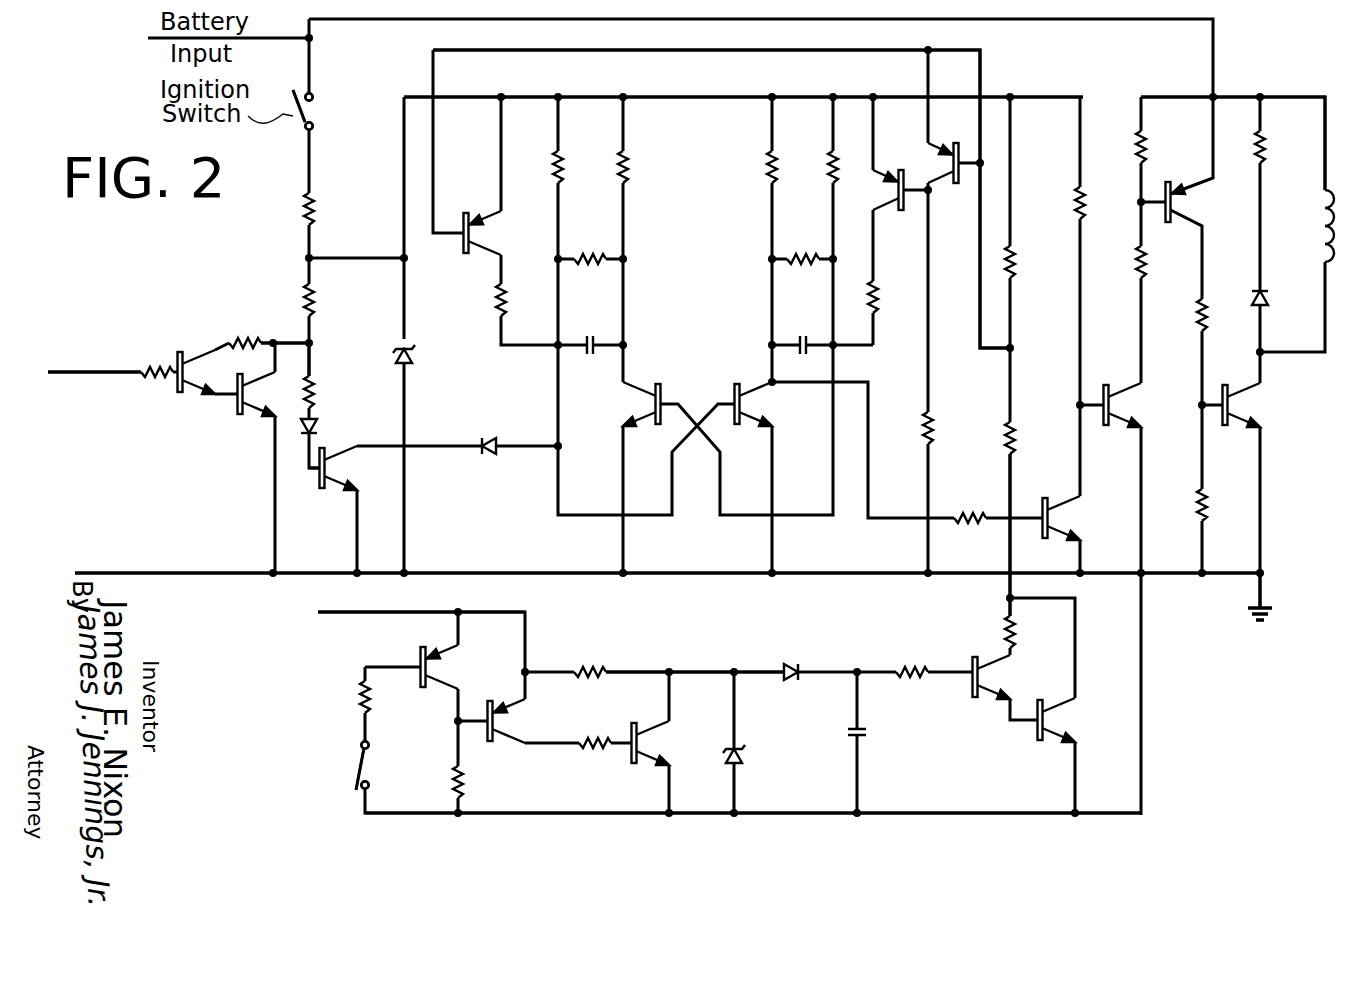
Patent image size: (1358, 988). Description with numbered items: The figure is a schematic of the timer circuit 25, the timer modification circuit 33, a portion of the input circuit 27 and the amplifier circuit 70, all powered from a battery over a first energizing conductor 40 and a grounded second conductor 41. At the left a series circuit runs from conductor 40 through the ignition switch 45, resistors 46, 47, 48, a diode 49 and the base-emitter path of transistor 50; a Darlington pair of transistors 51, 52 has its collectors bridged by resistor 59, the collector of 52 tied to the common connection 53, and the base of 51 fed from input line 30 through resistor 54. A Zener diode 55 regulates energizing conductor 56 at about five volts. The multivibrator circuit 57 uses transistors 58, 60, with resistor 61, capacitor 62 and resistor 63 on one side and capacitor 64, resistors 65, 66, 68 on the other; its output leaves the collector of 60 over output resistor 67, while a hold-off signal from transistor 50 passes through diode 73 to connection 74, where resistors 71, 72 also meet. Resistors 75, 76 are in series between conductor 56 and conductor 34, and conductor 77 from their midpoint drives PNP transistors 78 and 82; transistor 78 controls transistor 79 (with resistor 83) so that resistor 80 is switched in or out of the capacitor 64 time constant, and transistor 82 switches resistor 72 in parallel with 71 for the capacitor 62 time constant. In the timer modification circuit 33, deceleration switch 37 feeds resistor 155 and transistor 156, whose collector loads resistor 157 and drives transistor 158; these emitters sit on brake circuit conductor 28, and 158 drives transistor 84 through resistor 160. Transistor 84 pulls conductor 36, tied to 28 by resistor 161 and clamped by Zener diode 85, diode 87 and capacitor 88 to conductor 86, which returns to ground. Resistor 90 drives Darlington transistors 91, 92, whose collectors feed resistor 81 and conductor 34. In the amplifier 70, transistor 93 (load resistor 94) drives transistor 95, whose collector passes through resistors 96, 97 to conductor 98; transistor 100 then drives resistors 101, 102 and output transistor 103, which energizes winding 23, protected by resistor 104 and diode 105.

The winding 23 is at (1311, 226).
The timer circuit 25 is at (698, 72).
The input circuit 27 is at (222, 414).
The brake circuit conductor 28 is at (273, 652).
The input line 30 is at (90, 372).
The timer modification circuit 33 is at (917, 840).
The conductor 34 is at (1008, 552).
The conductor 36 is at (741, 672).
The vehicle deceleration switch 37 is at (379, 766).
The first energizing conductor 40 is at (427, 20).
The second energizing input conductor 41 is at (118, 573).
The ignition switch 45 is at (320, 110).
The resistor 46 is at (326, 209).
The resistor 47 is at (325, 300).
The resistor 48 is at (325, 392).
The diode 49 is at (323, 428).
The NPN type transistor 50 is at (343, 468).
The NPN type transistor 51 is at (202, 372).
The NPN type transistor 52 is at (261, 394).
The common connection 53 is at (311, 343).
The resistor 54 is at (156, 359).
The Zener diode 55 is at (410, 351).
The energizing conductor 56 is at (532, 96).
The multivibrator circuit 57 is at (712, 372).
The NPN type transistor 58 is at (634, 404).
The resistor 59 is at (244, 330).
The NPN type transistor 60 is at (764, 404).
The resistor 61 is at (639, 167).
The capacitor 62 is at (592, 334).
The resistor 63 is at (590, 247).
The capacitor 64 is at (807, 334).
The resistor 65 is at (803, 247).
The resistor 66 is at (820, 167).
The output resistor 67 is at (970, 505).
The resistor 68 is at (759, 167).
The amplifier circuit 70 is at (1130, 79).
The resistor 71 is at (575, 167).
The resistor 72 is at (517, 300).
The diode 73 is at (496, 435).
The connection 74 is at (575, 446).
The resistor 75 is at (1026, 262).
The resistor 76 is at (996, 438).
The conductor 77 is at (995, 50).
The PNP type transistor 78 is at (940, 163).
The PNP type transistor 79 is at (885, 190).
The resistor 80 is at (889, 297).
The resistor 81 is at (1025, 632).
The PNP type transistor 82 is at (490, 233).
The resistor 83 is at (914, 428).
The NPN type transistor 84 is at (659, 743).
The Zener diode 85 is at (754, 749).
The conductor 86 is at (985, 813).
The diode 87 is at (792, 656).
The capacitor 88 is at (876, 733).
The resistor 90 is at (912, 656).
The NPN type transistor 91 is at (998, 677).
The NPN transistor 92 is at (1066, 720).
The NPN type transistor 93 is at (1070, 518).
The resistor 94 is at (1066, 203).
The NPN type transistor 95 is at (1129, 405).
The resistor 96 is at (1126, 262).
The resistor 97 is at (1126, 147).
The conductor 98 is at (1300, 96).
The PNP type transistor 100 is at (1201, 202).
The resistor 101 is at (1186, 315).
The resistor 102 is at (1224, 505).
The NPN type transistor 103 is at (1254, 405).
The resistor 104 is at (1284, 147).
The diode 105 is at (1283, 295).
The input resistor 155 is at (345, 697).
The PNP type transistor 156 is at (454, 667).
The resistor 157 is at (480, 779).
The PNP type transistor 158 is at (519, 721).
The resistor 160 is at (596, 728).
The resistor 161 is at (591, 659).